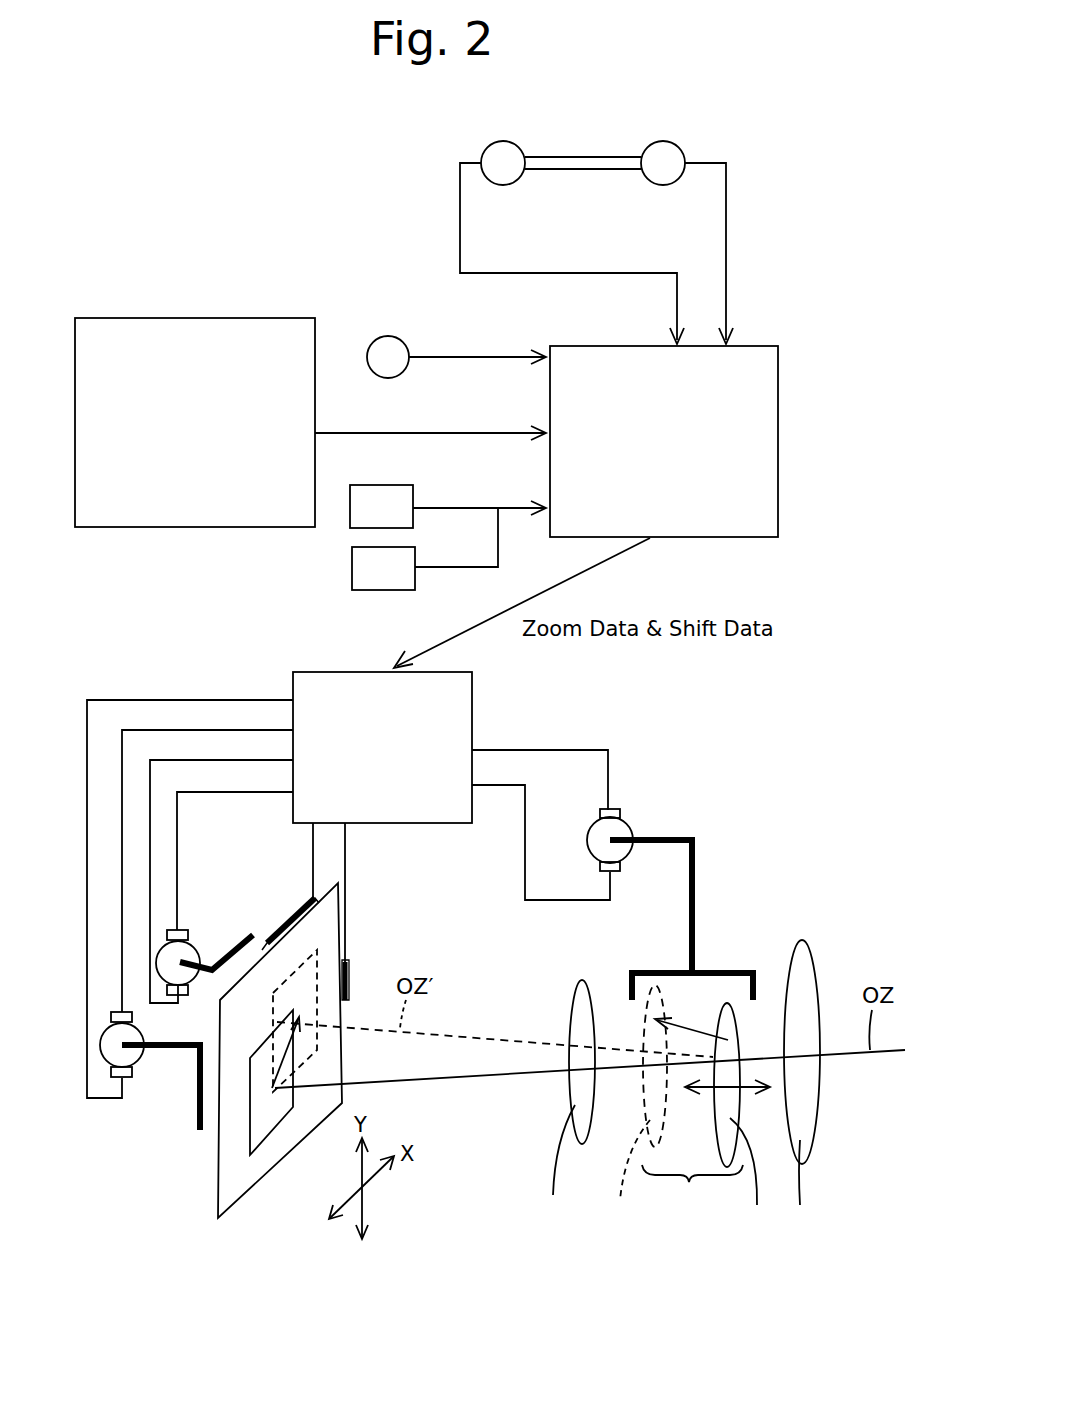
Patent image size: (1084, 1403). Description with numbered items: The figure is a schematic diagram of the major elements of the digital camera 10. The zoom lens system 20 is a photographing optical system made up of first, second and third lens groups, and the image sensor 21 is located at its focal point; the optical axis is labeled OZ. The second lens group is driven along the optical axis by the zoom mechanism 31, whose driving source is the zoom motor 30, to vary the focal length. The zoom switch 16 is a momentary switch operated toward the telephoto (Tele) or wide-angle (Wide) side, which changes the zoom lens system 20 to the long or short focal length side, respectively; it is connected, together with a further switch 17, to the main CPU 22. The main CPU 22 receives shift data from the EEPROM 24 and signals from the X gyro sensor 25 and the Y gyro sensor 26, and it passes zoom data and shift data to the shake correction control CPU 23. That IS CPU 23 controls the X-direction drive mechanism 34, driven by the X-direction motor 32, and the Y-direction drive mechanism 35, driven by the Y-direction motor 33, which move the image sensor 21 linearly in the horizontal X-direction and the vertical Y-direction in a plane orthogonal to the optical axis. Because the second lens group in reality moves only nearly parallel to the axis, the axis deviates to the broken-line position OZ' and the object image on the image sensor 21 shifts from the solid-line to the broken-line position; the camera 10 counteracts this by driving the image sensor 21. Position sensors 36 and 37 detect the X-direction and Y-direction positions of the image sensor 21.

The digital camera 10 is at (189, 185).
The zoom switch 16 is at (692, 140).
The switch 17 is at (402, 347).
The zoom lens system 20 is at (822, 1232).
The image sensor 21 is at (243, 1188).
The main CPU 22 is at (780, 364).
The shake correction control CPU 23 is at (348, 672).
The EEPROM 24 is at (280, 317).
The X gyro sensor 25 is at (400, 485).
The Y gyro sensor 26 is at (376, 592).
The zoom motor 30 is at (618, 828).
The zoom mechanism 31 is at (697, 870).
The X-direction motor 32 is at (183, 945).
The Y-direction motor 33 is at (132, 1054).
The X-direction drive mechanism 34 is at (235, 940).
The Y-direction drive mechanism 35 is at (197, 1092).
The position sensor 36 is at (288, 915).
The position sensor 37 is at (350, 975).